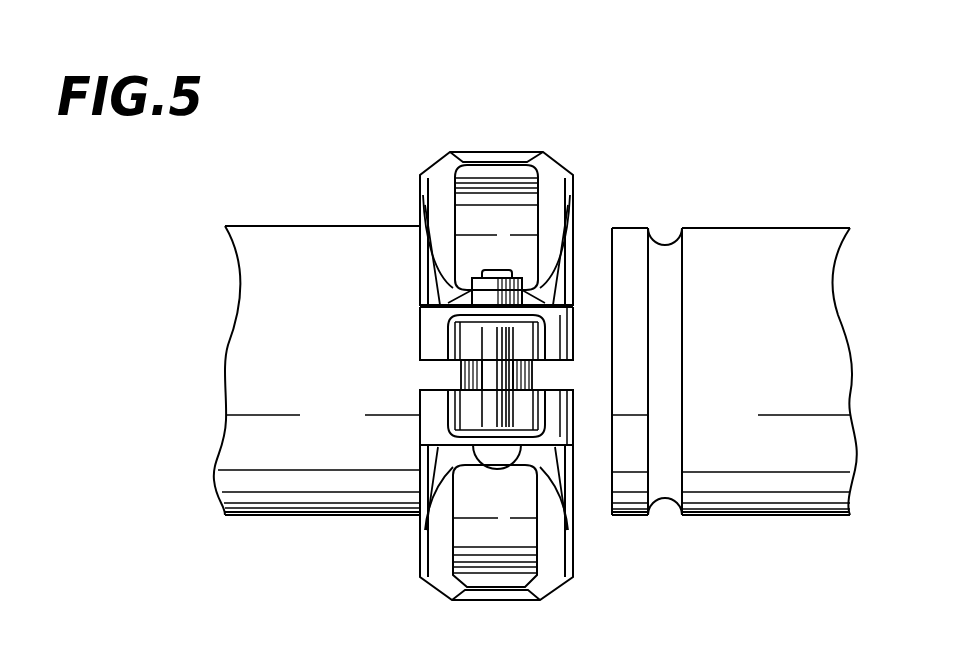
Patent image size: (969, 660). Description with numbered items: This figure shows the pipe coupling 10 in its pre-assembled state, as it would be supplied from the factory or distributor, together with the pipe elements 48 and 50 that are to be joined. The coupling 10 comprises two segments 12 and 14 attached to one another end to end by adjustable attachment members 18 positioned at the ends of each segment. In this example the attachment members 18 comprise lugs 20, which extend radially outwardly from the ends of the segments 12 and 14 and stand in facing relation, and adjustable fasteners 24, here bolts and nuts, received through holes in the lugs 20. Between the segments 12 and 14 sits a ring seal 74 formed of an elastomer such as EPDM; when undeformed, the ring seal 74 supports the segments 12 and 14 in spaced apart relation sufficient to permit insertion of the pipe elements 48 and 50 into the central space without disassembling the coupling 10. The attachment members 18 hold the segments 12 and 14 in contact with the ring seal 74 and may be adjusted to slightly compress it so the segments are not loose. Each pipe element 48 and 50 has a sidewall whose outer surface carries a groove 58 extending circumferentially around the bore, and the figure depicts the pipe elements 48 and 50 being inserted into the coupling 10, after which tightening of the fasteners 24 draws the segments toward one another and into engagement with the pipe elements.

The pipe coupling 10 is at (641, 168).
The segment 12 is at (550, 588).
The segment 14 is at (420, 178).
The adjustable attachment member 18 is at (425, 345).
The lug 20 is at (422, 308).
The adjustable fastener 24 is at (488, 377).
The pipe element 48 is at (345, 518).
The pipe element 50 is at (734, 377).
The groove 58 is at (664, 245).
The ring seal 74 is at (515, 380).